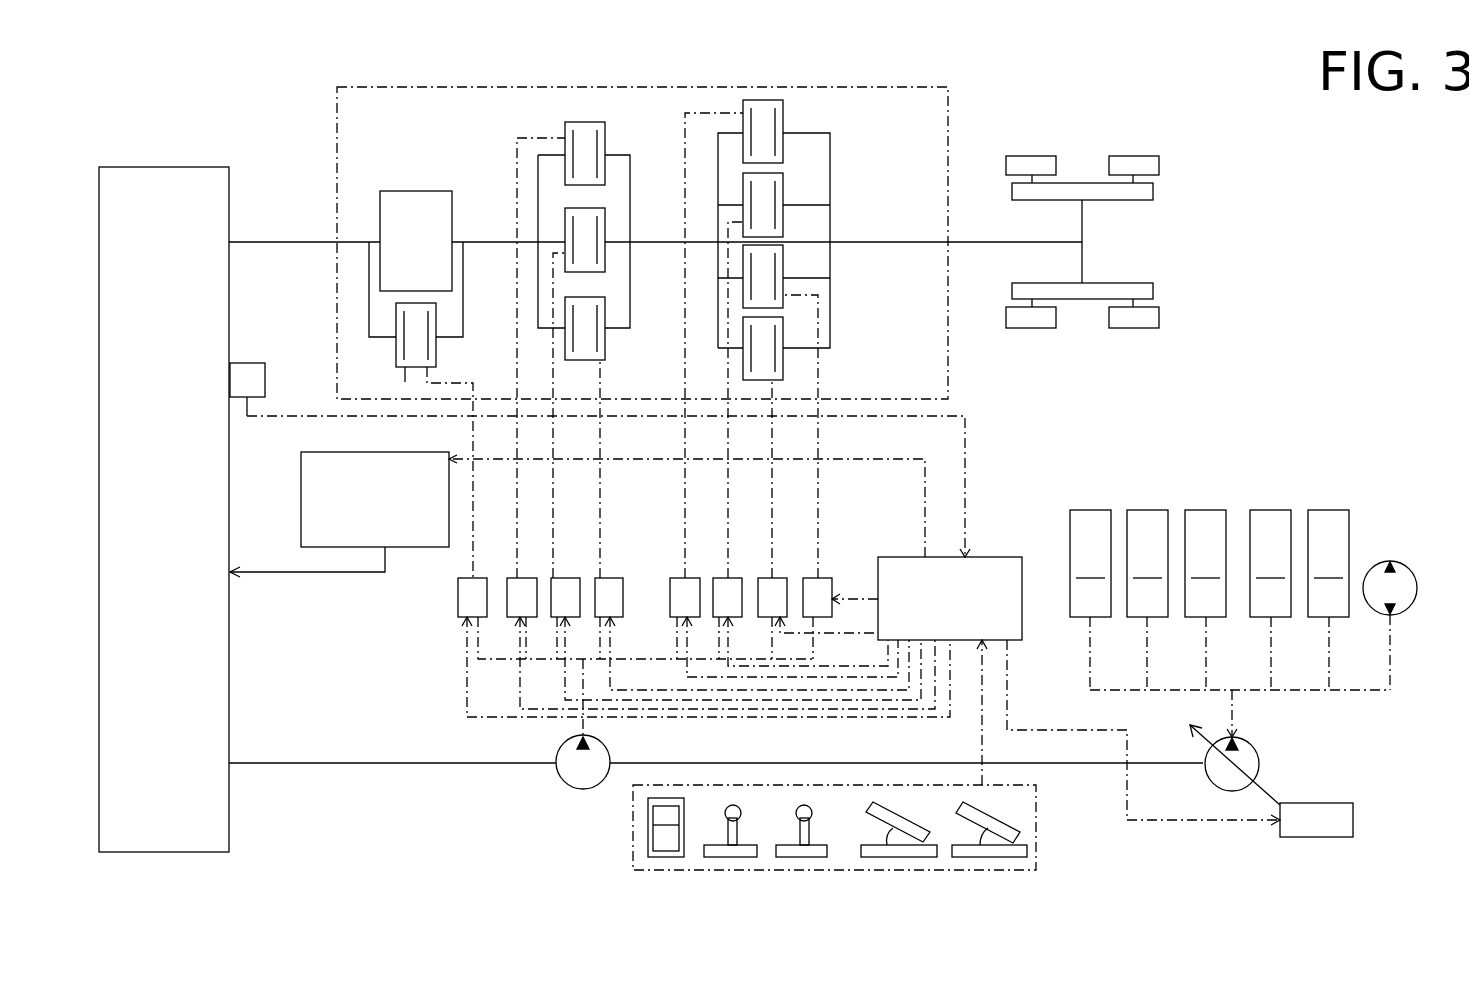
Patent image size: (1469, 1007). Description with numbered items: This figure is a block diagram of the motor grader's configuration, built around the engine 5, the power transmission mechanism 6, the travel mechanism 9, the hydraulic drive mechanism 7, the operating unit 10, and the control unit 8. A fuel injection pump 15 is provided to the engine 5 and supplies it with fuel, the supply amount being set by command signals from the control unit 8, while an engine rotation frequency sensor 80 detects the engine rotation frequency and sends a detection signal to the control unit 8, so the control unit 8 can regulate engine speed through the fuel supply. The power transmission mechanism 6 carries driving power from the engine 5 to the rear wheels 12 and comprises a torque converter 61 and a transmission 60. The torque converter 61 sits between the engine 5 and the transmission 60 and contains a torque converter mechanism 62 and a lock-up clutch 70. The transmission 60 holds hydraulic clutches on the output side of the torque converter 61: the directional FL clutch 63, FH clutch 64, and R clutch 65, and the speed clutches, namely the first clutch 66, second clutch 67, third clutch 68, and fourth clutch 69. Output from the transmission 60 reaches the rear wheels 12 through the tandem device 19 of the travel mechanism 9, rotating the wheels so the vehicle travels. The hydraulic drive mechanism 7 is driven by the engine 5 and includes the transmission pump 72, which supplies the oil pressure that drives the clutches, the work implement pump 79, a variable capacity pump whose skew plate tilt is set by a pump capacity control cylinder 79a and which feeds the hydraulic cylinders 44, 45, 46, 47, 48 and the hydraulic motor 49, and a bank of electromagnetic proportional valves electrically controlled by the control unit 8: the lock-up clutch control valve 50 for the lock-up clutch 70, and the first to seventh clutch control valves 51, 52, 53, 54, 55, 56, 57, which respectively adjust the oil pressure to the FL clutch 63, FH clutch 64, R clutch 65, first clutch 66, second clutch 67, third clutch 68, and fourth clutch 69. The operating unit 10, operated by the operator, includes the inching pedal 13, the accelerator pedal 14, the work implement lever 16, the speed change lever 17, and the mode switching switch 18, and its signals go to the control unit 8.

The engine 5 is at (176, 167).
The power transmission mechanism 6 is at (834, 87).
The hydraulic drive mechanism 7 is at (1385, 742).
The control unit 8 is at (941, 557).
The travel mechanism 9 is at (1215, 157).
The operating unit 10 is at (1036, 850).
The rear wheel 12 is at (1030, 156).
The inching pedal 13 is at (872, 803).
The accelerator pedal 14 is at (1000, 833).
The fuel injection pump 15 is at (301, 500).
The work implement lever 16 is at (804, 805).
The speed change lever 17 is at (733, 805).
The mode switching switch 18 is at (668, 798).
The tandem device 19 is at (1153, 191).
The hydraulic cylinder 44 is at (1090, 600).
The hydraulic cylinder 45 is at (1147, 600).
The hydraulic cylinder 46 is at (1205, 600).
The hydraulic cylinder 47 is at (1270, 600).
The hydraulic cylinder 48 is at (1328, 600).
The hydraulic motor 49 is at (1390, 561).
The lock-up clutch control valve 50 is at (458, 600).
The first clutch control valve 51 is at (507, 600).
The second clutch control valve 52 is at (565, 578).
The third clutch control valve 53 is at (610, 578).
The fourth clutch control valve 54 is at (687, 578).
The fifth clutch control valve 55 is at (730, 578).
The sixth clutch control valve 56 is at (820, 578).
The seventh clutch control valve 57 is at (775, 578).
The transmission 60 is at (658, 118).
The torque converter 61 is at (437, 147).
The torque converter mechanism 62 is at (400, 191).
The FL clutch 63 is at (585, 122).
The FH clutch 64 is at (587, 272).
The R clutch 65 is at (582, 360).
The first clutch 66 is at (783, 120).
The second clutch 67 is at (783, 192).
The third clutch 68 is at (783, 265).
The fourth clutch 69 is at (783, 363).
The lock-up clutch 70 is at (405, 381).
The transmission pump 72 is at (560, 779).
The work implement pump 79 is at (1260, 764).
The pump capacity control cylinder 79a is at (1353, 822).
The engine rotation frequency sensor 80 is at (256, 363).